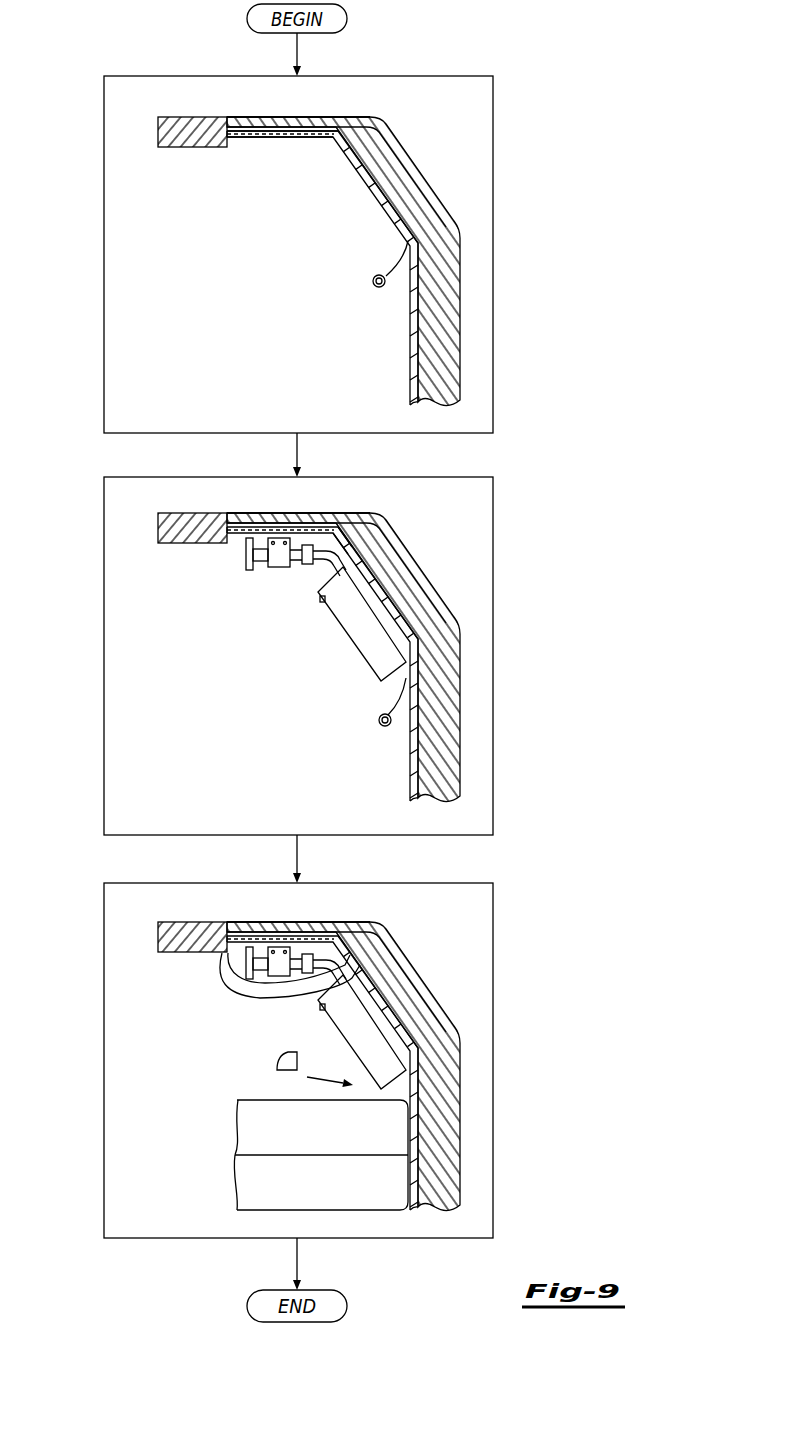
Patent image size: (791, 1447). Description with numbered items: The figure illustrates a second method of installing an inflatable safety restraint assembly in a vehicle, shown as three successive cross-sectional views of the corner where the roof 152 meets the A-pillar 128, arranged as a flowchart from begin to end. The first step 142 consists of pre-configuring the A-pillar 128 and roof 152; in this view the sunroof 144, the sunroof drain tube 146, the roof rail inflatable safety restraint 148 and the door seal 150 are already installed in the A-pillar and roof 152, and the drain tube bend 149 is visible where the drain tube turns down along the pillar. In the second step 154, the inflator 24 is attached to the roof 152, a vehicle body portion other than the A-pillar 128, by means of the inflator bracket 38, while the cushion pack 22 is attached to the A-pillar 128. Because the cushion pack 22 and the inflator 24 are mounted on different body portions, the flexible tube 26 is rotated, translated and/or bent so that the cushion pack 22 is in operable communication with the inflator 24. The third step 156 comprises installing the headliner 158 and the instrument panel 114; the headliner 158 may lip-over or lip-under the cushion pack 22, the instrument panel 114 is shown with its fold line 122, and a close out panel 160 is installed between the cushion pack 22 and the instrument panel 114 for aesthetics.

The cushion pack 22 is at (363, 645).
The inflator 24 is at (248, 553).
The flexible tube 26 is at (327, 560).
The inflator bracket 38 is at (282, 562).
The instrument panel 114 is at (277, 1195).
The cushion fold 122 is at (255, 1138).
The A-pillar 128 is at (447, 233).
The first step 142 is at (104, 207).
The sunroof 144 is at (178, 147).
The sunroof drain tube 146 is at (320, 117).
The roof rail inflatable safety restraint 148 is at (338, 145).
The strip bend 149 is at (338, 551).
The door seal 150 is at (378, 201).
The roof 152 is at (266, 108).
The second step 154 is at (104, 672).
The third step 156 is at (104, 1050).
The headliner 158 is at (220, 972).
The close out panel 160 is at (280, 1062).